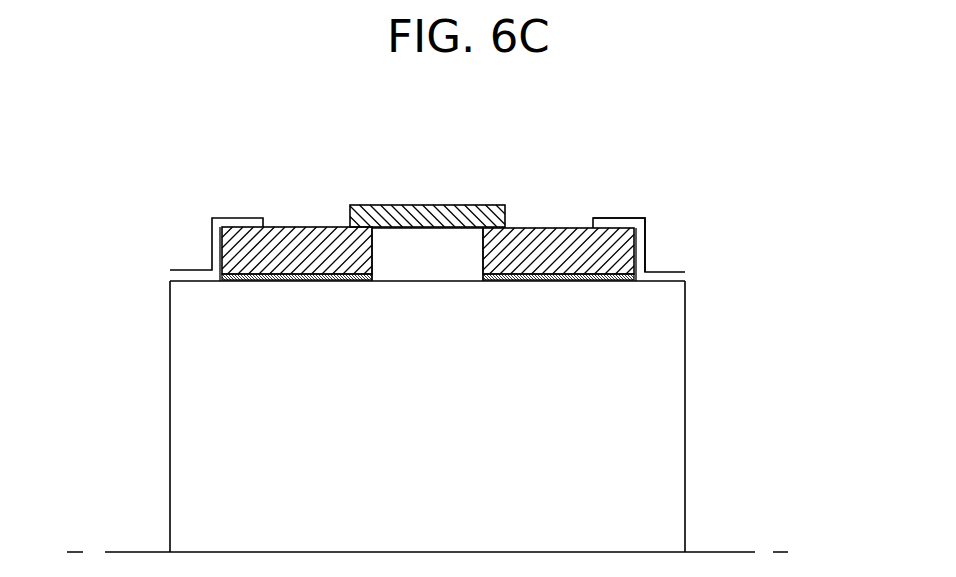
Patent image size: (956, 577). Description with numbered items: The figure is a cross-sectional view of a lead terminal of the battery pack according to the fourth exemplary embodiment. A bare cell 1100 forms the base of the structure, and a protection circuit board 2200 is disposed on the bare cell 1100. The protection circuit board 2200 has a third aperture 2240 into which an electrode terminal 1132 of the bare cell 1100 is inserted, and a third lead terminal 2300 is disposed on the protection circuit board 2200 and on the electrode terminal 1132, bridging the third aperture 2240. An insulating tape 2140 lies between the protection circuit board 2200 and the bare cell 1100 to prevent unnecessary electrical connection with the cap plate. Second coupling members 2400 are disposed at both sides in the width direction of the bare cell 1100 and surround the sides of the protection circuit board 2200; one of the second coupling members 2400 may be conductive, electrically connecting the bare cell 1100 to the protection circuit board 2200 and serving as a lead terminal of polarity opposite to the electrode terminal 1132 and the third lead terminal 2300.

The bare cell 1100 is at (688, 416).
The electrode terminal 1132 is at (433, 272).
The insulating tape 2140 is at (587, 282).
The protection circuit board 2200 is at (647, 232).
The third aperture 2240 is at (489, 246).
The third lead terminal 2300 is at (433, 203).
The second coupling members 2400 is at (691, 277).